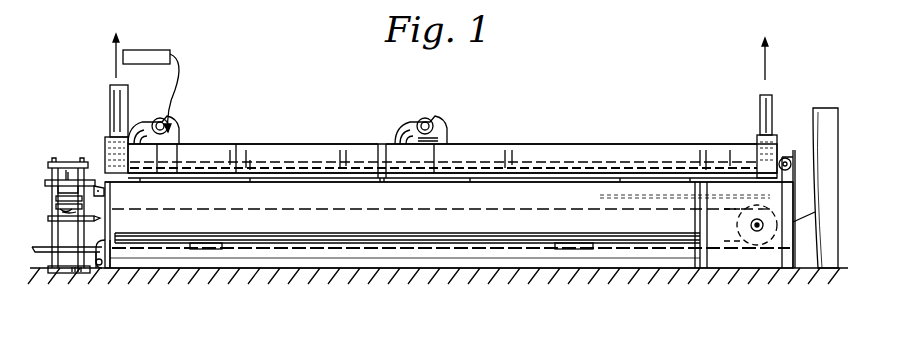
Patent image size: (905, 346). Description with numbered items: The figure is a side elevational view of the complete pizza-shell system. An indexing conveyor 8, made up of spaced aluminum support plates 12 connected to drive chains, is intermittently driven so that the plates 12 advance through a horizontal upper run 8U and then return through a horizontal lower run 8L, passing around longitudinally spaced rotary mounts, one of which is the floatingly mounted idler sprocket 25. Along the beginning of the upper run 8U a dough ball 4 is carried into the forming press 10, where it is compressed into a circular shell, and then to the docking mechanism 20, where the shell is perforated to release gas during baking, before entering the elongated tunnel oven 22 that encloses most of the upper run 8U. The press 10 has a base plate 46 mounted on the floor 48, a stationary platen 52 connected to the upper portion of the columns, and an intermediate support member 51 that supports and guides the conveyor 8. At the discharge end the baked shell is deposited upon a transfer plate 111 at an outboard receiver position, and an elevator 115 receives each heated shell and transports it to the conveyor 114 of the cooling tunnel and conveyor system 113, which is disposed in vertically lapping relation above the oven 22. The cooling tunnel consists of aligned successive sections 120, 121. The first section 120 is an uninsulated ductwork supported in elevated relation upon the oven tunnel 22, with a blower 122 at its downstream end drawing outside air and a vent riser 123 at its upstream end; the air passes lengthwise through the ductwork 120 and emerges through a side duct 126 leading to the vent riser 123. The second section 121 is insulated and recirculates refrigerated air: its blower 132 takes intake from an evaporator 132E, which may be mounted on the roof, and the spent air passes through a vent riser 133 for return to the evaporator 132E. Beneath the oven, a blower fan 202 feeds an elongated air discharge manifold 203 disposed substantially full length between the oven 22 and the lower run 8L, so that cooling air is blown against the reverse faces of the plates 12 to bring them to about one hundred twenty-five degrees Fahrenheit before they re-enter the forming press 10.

The dough ball 4 is at (58, 207).
The indexing conveyor 8 is at (558, 196).
The upper run 8U is at (262, 213).
The lower run 8L is at (324, 248).
The forming press 10 is at (48, 182).
The support plates 12 is at (198, 249).
The docking mechanism 20 is at (92, 185).
The tunnel oven 22 is at (588, 193).
The rotary mount 25 is at (760, 246).
The base plate 46 is at (66, 273).
The floor 48 is at (396, 268).
The intermediate support member 51 is at (58, 218).
The stationary platen 52 is at (63, 160).
The transfer plate 111 is at (802, 225).
The cooling tunnel and conveyor system 113 is at (366, 143).
The cooling conveyor 114 is at (508, 150).
The elevator 115 is at (822, 108).
The first cooling tunnel section 120 is at (600, 141).
The second cooling tunnel section 121 is at (250, 143).
The blower 122 is at (432, 116).
The vent riser 123 is at (762, 115).
The side duct 126 is at (757, 160).
The blower 132 is at (172, 135).
The evaporator 132E is at (123, 58).
The vent riser 133 is at (112, 108).
The blower fan 202 is at (104, 258).
The air discharge manifold 203 is at (455, 240).